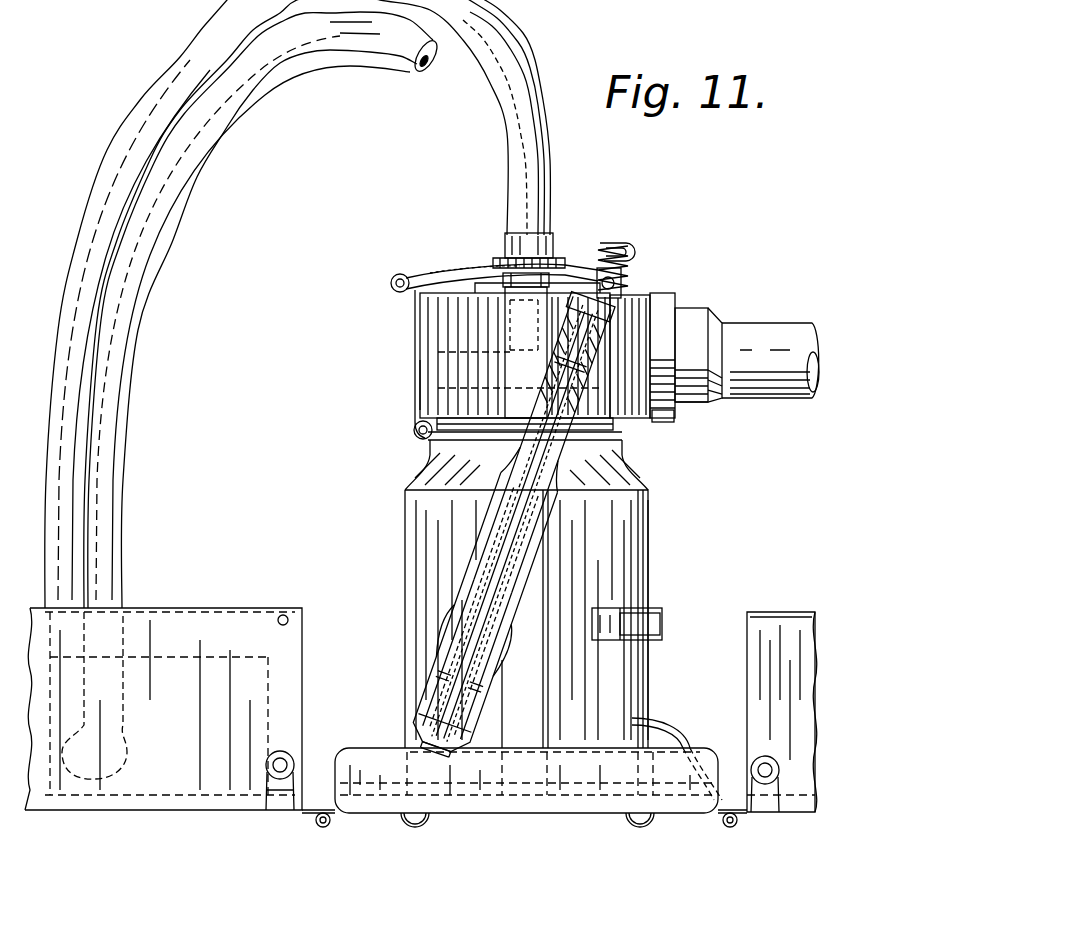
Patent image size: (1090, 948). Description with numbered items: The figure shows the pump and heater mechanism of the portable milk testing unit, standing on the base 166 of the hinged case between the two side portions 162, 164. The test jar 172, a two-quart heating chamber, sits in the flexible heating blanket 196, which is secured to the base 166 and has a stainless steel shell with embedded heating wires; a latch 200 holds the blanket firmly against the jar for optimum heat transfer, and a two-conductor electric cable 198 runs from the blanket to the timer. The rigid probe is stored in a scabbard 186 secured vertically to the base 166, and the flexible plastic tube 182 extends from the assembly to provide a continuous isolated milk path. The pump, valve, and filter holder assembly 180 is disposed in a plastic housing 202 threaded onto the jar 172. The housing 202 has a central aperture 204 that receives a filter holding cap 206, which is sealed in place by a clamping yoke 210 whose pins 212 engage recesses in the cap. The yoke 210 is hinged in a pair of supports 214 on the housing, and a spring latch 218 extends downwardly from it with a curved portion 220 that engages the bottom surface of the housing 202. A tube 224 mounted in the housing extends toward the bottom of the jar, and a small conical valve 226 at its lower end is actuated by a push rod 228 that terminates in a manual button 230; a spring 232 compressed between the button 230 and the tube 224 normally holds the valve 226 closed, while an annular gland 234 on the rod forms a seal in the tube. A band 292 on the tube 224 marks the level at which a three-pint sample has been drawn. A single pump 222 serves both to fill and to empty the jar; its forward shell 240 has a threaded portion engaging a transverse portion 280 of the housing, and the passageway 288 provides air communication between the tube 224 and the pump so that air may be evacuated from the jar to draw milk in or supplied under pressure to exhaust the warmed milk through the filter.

The flexible plastic tube 182 is at (166, 68).
The clamping yoke 210 is at (434, 276).
The filter holding cap 206 is at (494, 292).
The pins 212 is at (546, 268).
The manual button 230 is at (614, 250).
The spring 232 is at (628, 264).
The supports 214 is at (622, 283).
The annular gland 234 is at (615, 298).
The pump 222 is at (757, 334).
The central aperture 204 is at (506, 318).
The housing 202 is at (438, 340).
The passageway 288 is at (686, 355).
The spring latch 218 is at (416, 384).
The pump, valve, and filter holder assembly 180 is at (401, 409).
The curved portion 220 is at (412, 442).
The transverse portion 280 is at (662, 422).
The forward shell 240 is at (702, 404).
The jar 172 is at (612, 476).
The tube 224 is at (500, 520).
The flexible heating blanket 196 is at (626, 554).
The latch 200 is at (626, 612).
The push rod 228 is at (490, 600).
The scabbard 186 is at (535, 657).
The side portion 162 is at (783, 616).
The band 292 is at (425, 692).
The two-conductor electric cable 198 is at (680, 735).
The conical valve 226 is at (416, 757).
The side portion 164 is at (196, 783).
The base 166 is at (520, 806).